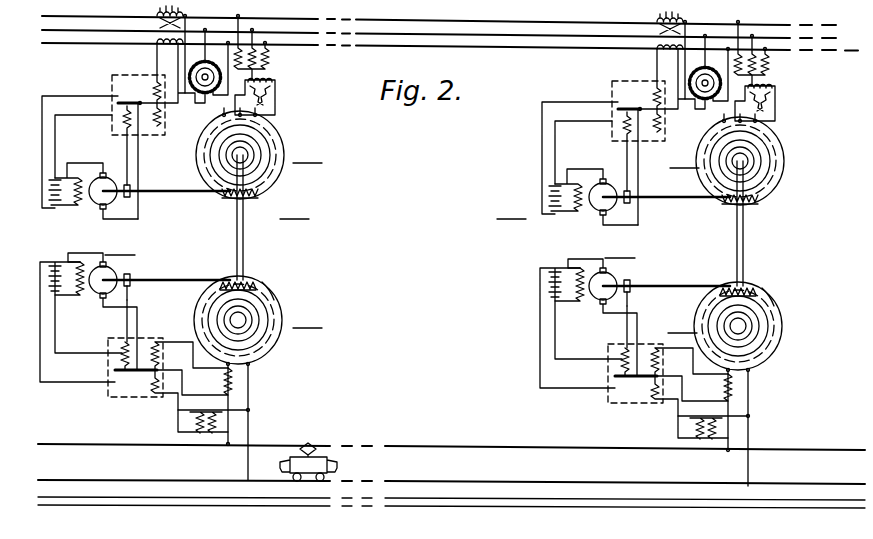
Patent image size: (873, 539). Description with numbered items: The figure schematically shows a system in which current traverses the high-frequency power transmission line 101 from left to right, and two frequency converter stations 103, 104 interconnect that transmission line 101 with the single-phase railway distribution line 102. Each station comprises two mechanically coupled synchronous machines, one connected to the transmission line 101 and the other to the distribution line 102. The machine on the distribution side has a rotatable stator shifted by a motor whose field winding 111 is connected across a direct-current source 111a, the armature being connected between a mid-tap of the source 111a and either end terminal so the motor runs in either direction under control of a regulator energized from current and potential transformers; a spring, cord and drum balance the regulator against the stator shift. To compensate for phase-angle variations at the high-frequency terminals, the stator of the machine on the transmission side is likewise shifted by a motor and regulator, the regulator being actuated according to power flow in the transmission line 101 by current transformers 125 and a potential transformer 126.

The power transmission line 101 is at (393, 46).
The railway distribution line 102 is at (428, 447).
The frequency converter station 103 is at (273, 217).
The frequency converter station 104 is at (511, 211).
The field winding 111 is at (92, 247).
The direct-current source 111a is at (53, 278).
The current transformer 125 is at (160, 46).
The potential transformer 126 is at (205, 97).